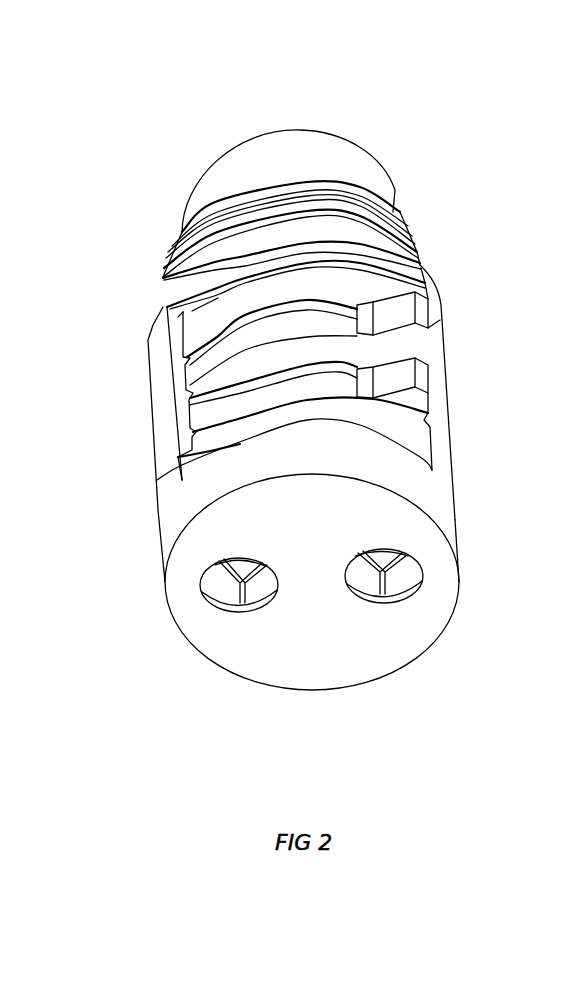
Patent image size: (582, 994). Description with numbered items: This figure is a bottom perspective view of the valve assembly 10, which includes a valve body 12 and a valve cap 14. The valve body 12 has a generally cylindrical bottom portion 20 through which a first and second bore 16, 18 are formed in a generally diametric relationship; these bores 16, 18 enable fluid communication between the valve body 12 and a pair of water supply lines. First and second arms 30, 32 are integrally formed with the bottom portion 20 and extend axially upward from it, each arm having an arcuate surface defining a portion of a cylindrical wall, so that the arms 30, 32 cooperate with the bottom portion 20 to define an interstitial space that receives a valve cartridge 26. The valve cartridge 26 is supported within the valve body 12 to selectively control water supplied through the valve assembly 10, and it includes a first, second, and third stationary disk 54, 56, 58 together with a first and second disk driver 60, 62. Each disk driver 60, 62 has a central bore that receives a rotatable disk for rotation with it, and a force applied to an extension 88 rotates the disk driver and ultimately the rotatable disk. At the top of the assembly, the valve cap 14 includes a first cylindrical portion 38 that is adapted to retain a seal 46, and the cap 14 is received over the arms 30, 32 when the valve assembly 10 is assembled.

The valve assembly 10 is at (442, 117).
The valve body 12 is at (458, 516).
The valve cap 14 is at (397, 188).
The first and second bores 16 is at (208, 605).
The second opening 18 is at (417, 597).
The bottom portion 20 is at (320, 658).
The valve cartridge 26 is at (202, 425).
The first arm 30 is at (200, 347).
The second arm 32 is at (440, 457).
The first cylindrical portion 38 is at (283, 146).
The seal 46 is at (185, 232).
The first stationary disk 54 is at (162, 462).
The second stationary disk 56 is at (335, 352).
The third stationary disk 58 is at (183, 313).
The first disk driver 60 is at (203, 452).
The second disk driver 62 is at (200, 390).
The first extension 88 is at (423, 313).